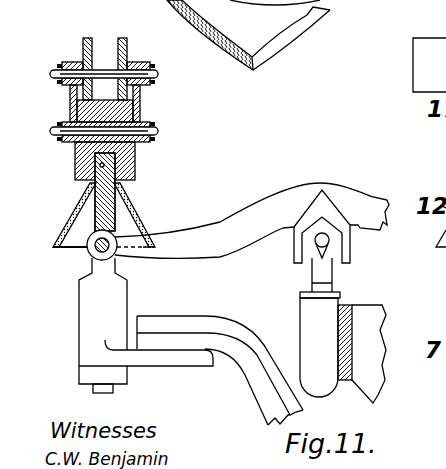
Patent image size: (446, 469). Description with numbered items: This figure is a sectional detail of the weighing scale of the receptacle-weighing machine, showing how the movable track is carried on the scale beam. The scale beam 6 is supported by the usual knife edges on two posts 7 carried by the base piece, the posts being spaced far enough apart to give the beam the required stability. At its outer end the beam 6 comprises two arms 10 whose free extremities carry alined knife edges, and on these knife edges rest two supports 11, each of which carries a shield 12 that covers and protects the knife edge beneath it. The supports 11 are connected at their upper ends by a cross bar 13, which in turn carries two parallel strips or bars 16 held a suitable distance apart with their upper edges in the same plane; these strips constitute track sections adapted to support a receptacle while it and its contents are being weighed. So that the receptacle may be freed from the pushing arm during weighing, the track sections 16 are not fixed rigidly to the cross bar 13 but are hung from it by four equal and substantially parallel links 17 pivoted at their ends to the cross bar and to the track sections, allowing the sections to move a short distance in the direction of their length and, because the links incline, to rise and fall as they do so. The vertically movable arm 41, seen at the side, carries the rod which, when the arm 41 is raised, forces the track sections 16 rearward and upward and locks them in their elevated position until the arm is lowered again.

The scale beam 6 is at (318, 208).
The posts 7 is at (343, 350).
The arms 10 is at (220, 247).
The supports 11 is at (107, 202).
The shield 12 is at (73, 212).
The cross bar 13 is at (137, 155).
The track sections 16 is at (88, 53).
The links 17 is at (70, 107).
The vertically movable arm 41 is at (232, 332).